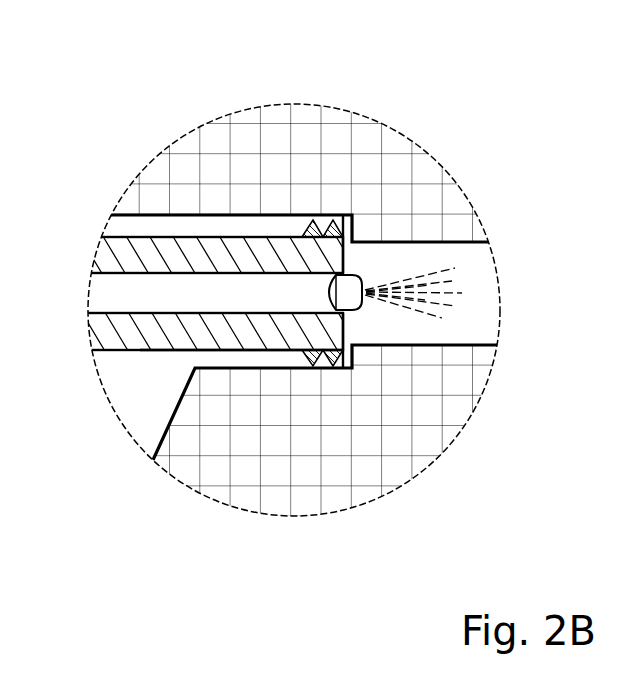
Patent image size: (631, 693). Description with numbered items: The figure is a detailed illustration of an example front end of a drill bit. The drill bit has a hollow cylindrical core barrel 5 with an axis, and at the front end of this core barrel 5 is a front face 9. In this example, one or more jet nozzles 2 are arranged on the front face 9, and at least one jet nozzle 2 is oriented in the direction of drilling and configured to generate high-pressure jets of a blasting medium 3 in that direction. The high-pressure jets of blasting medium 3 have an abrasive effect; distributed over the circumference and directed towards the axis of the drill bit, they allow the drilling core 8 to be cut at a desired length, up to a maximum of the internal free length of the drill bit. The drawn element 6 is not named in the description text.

The jet nozzle 2 is at (350, 285).
The blasting medium 3 is at (440, 280).
The core barrel 5 is at (164, 364).
The insert sleeve 6 is at (126, 352).
The drilling core 8 is at (218, 410).
The front face 9 is at (325, 237).